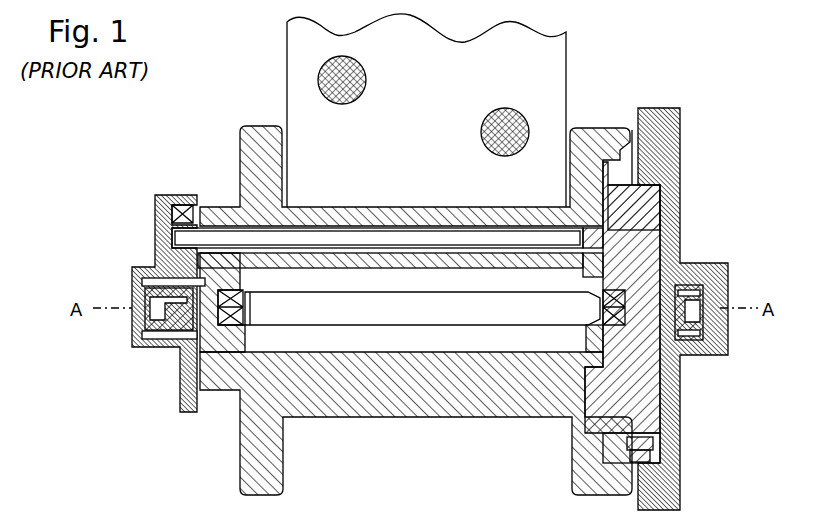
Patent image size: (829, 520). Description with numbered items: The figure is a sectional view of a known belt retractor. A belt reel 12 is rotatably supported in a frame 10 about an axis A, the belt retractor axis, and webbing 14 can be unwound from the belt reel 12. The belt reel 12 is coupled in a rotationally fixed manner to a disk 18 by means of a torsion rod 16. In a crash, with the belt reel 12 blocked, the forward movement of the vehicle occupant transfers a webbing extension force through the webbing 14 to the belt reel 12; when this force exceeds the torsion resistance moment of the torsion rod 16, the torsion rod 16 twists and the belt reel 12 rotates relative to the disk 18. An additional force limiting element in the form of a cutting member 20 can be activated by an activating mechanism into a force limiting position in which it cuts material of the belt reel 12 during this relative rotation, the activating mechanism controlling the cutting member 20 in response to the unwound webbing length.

The frame 10 is at (680, 130).
The belt reel 12 is at (455, 400).
The webbing 14 is at (300, 45).
The torsion rod 16 is at (345, 312).
The disk 18 is at (652, 383).
The cutting member 20 is at (688, 225).